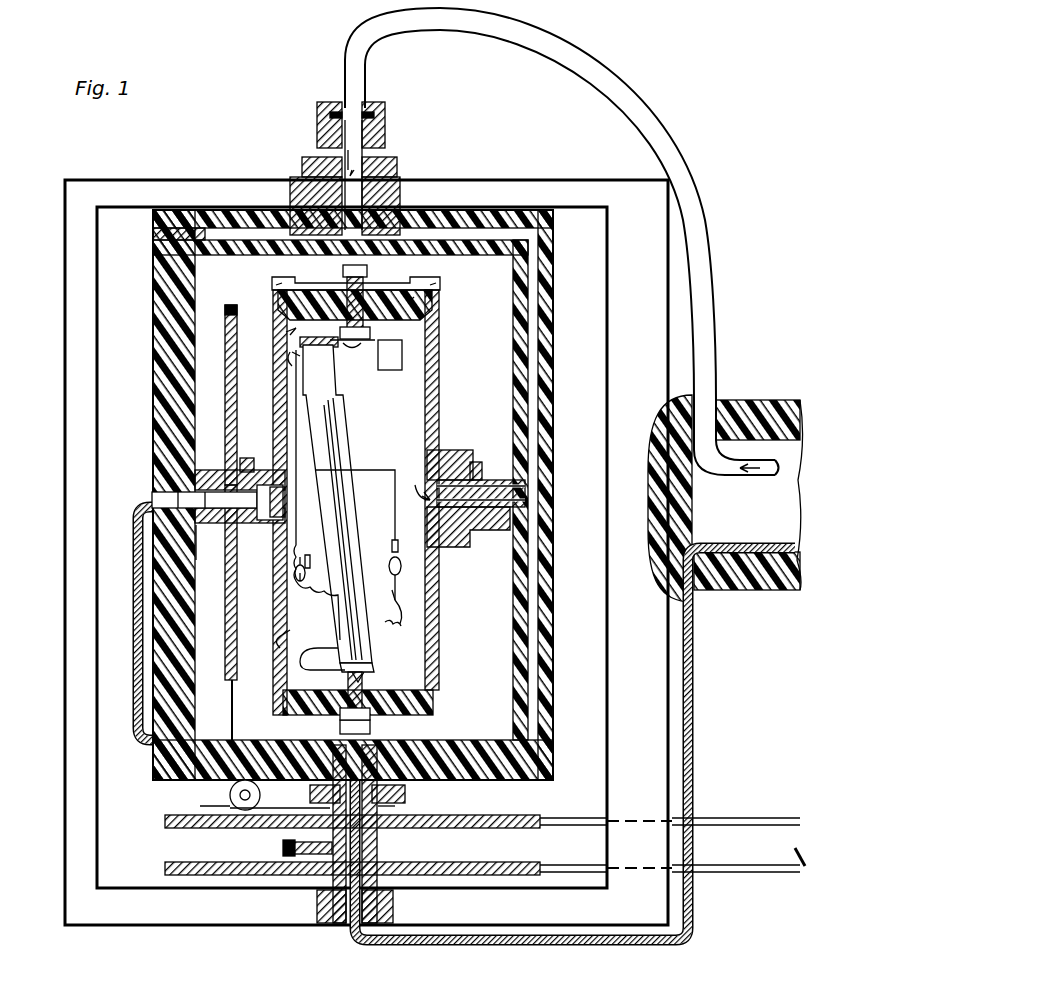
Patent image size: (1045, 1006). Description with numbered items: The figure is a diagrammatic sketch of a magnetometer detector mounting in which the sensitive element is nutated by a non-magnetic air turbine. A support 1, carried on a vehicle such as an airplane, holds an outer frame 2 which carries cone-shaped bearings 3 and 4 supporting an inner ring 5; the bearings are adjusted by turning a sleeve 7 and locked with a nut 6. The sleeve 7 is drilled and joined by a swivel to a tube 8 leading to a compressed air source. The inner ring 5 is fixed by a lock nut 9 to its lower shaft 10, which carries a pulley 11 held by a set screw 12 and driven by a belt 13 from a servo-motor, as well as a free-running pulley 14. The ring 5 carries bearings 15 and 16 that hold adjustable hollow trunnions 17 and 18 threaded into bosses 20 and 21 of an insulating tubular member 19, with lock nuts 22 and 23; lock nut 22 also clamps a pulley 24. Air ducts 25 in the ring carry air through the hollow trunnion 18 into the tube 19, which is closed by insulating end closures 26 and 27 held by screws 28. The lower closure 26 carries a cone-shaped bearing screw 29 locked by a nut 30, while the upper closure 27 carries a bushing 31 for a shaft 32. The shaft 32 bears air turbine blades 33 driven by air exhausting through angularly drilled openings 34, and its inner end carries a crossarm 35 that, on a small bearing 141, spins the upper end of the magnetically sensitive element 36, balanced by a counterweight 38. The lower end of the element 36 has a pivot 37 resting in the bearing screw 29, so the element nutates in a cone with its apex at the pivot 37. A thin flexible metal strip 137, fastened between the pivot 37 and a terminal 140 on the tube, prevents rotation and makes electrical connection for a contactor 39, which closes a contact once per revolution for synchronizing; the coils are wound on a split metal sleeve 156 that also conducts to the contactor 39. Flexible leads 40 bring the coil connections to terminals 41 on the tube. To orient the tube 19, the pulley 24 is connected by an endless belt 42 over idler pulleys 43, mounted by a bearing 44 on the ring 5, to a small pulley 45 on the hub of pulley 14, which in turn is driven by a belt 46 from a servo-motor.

The support 1 is at (778, 404).
The outer frame 2 is at (488, 186).
The bearing 3 is at (300, 205).
The bearing 4 is at (330, 922).
The inner ring 5 is at (153, 346).
The nut 6 is at (400, 163).
The sleeve 7 is at (378, 148).
The tube 8 is at (638, 85).
The lock nut 9 is at (398, 794).
The lower shaft 10 is at (400, 920).
The pulley 11 is at (448, 862).
The set screw 12 is at (283, 844).
The belt 13 is at (745, 872).
The pulley 14 is at (476, 822).
The bearing 15 is at (153, 482).
The bearing 16 is at (525, 485).
The hollow trunnion 17 is at (203, 528).
The hollow trunnion 18 is at (495, 545).
The tubular member 19 is at (435, 329).
The boss 20 is at (252, 460).
The boss 21 is at (455, 450).
The lock nut 22 is at (218, 470).
The lock nut 23 is at (482, 462).
The pulley 24 is at (250, 614).
The air ducts 25 is at (540, 272).
The lower closure 26 is at (420, 708).
The upper closure 27 is at (330, 290).
The screws 28 is at (273, 310).
The bearing screw 29 is at (370, 732).
The nut 30 is at (348, 722).
The bushing 31 is at (375, 290).
The shaft 32 is at (432, 306).
The air turbine blades 33 is at (276, 278).
The angularly drilled openings 34 is at (414, 297).
The crossarm 35 is at (352, 348).
The magnetically sensitive element 36 is at (340, 446).
The pivot 37 is at (366, 668).
The counterweight 38 is at (402, 349).
The contactor 39 is at (290, 358).
The flexible leads 40 is at (358, 628).
The terminals 41 is at (398, 562).
The endless belt 42 is at (232, 710).
The idler pulleys 43 is at (230, 798).
The bearing 44 is at (228, 808).
The small pulley 45 is at (395, 806).
The belt 46 is at (772, 818).
The flexible metal strip 137 is at (316, 670).
The terminal 140 is at (282, 645).
The bearing 141 is at (288, 332).
The metal sleeve 156 is at (338, 402).